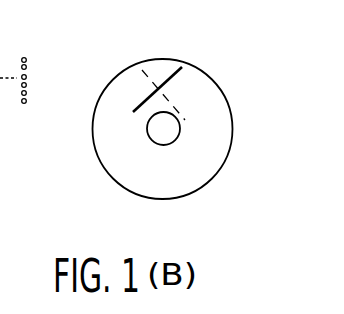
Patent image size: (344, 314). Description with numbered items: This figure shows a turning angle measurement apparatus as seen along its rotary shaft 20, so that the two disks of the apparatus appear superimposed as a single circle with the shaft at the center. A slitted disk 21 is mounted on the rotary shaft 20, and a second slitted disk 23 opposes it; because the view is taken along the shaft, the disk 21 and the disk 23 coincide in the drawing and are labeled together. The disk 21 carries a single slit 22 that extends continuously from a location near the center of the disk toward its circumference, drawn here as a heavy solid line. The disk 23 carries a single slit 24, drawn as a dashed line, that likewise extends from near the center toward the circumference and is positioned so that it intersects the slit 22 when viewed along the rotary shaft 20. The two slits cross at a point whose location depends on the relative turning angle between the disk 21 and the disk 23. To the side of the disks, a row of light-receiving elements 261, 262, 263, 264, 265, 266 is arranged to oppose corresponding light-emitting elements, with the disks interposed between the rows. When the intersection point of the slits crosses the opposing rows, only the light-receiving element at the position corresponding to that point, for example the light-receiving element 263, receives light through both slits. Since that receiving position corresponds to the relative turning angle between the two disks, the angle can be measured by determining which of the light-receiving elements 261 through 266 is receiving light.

The rotary shaft 20 is at (150, 142).
The slitted disk 21 is at (170, 148).
The slit 22 is at (180, 71).
The slitted disk 23 is at (190, 170).
The slit 24 is at (153, 72).
The light-receiving element 261 is at (26, 103).
The light-receiving element 262 is at (26, 95).
The light-receiving element 263 is at (26, 86).
The light-receiving element 264 is at (26, 77).
The light-receiving element 265 is at (26, 66).
The light-receiving element 266 is at (26, 59).